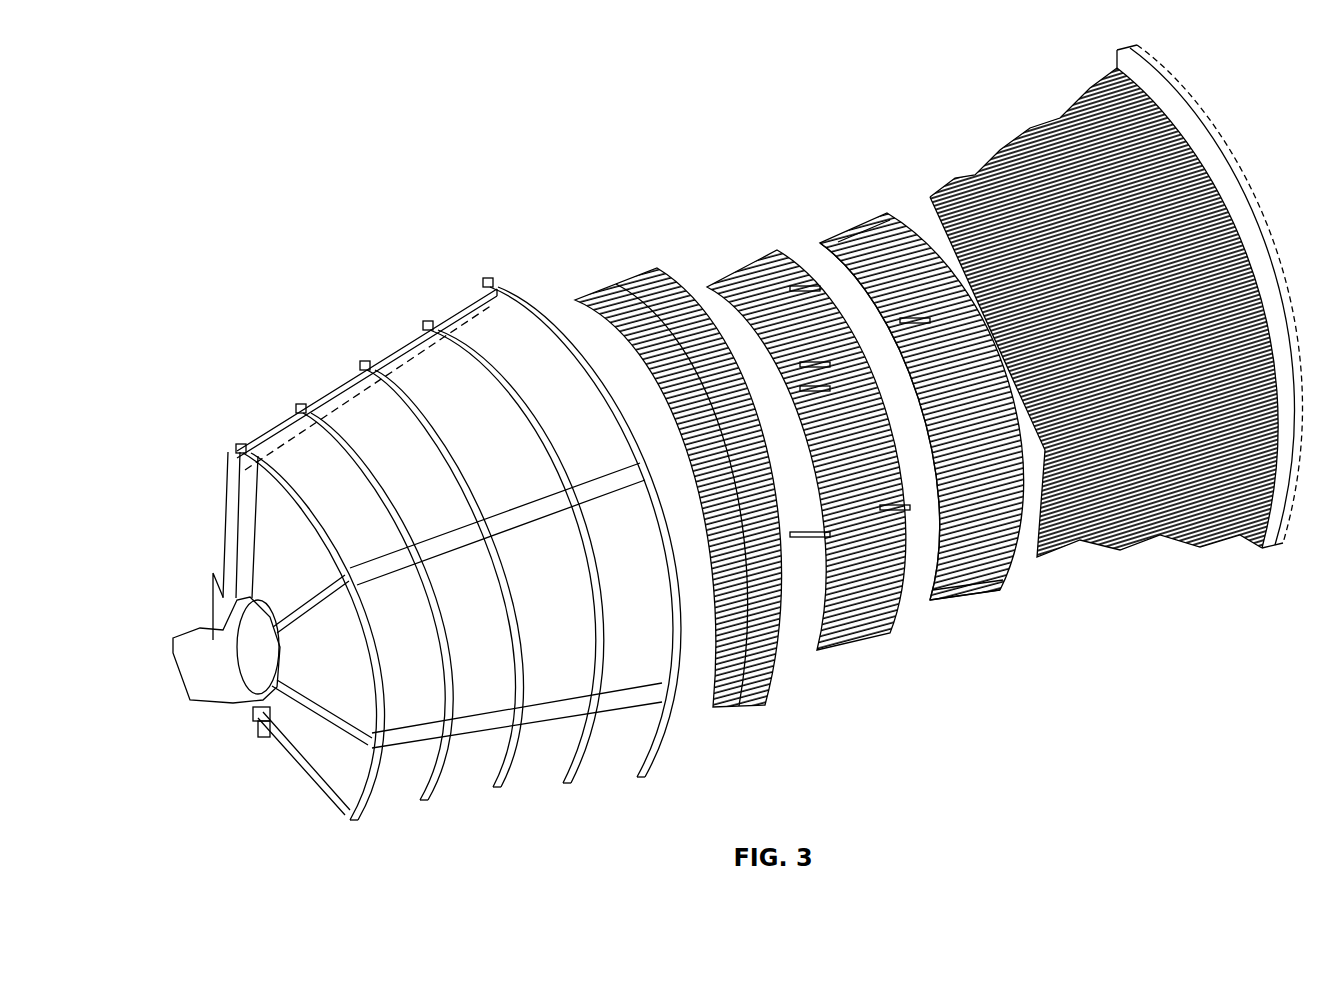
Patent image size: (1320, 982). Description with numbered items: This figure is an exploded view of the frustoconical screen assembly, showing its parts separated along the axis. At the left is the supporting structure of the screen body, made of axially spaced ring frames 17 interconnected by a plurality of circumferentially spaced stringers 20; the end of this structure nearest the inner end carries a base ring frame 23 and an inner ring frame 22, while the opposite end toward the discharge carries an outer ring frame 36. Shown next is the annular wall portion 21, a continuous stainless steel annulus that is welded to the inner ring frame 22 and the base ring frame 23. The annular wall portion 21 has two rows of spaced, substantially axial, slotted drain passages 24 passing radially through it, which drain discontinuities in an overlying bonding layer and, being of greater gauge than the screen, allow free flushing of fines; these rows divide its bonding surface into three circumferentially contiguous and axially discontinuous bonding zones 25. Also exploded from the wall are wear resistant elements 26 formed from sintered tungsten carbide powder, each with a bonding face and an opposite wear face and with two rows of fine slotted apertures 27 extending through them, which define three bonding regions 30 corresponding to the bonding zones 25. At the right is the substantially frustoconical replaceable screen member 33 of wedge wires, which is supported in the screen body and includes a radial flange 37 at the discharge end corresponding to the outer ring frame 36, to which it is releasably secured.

The ring frames 17 is at (500, 790).
The stringers 20 is at (607, 471).
The annular wall portion 21 is at (952, 600).
The inner ring frame 22 is at (423, 795).
The base ring frame 23 is at (355, 820).
The drain passages 24 is at (838, 242).
The bonding zones 25 is at (806, 287).
The wear resistant elements 26 is at (837, 523).
The apertures 27 is at (808, 391).
The bonding regions 30 is at (660, 302).
The replaceable screen member 33 is at (1113, 523).
The outer ring frame 36 is at (676, 650).
The radial flange 37 is at (1205, 168).